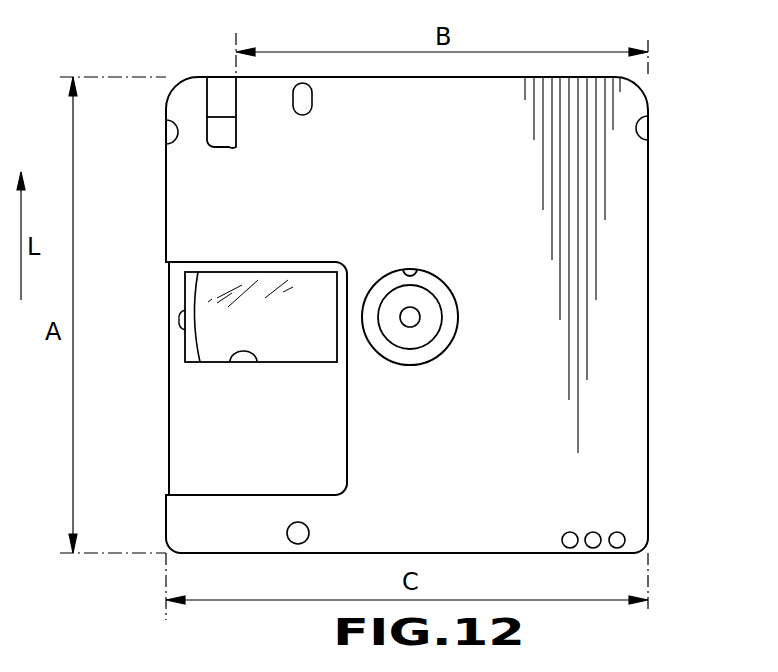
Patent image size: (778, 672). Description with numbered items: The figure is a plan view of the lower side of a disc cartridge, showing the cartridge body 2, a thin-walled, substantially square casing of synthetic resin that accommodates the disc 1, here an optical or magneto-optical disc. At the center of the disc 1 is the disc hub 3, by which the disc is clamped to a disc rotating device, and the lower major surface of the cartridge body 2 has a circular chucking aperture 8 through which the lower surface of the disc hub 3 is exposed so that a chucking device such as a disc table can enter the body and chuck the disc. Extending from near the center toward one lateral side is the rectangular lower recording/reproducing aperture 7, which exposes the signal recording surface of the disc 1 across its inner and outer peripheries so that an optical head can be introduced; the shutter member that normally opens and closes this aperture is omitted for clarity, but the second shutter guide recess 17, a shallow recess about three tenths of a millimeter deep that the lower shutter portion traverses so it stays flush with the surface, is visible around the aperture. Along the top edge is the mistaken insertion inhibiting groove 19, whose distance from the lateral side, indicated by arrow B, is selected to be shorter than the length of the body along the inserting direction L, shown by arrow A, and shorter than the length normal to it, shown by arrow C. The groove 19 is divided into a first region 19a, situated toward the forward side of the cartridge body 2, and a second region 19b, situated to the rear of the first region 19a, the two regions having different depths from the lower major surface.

The disc 1 is at (218, 320).
The cartridge body 2 is at (650, 174).
The disc hub 3 is at (418, 334).
The lower recording/reproducing aperture 7 is at (230, 362).
The chucking aperture 8 is at (415, 270).
The second shutter guide recess 17 is at (208, 495).
The mistaken insertion inhibiting groove 19 is at (206, 90).
The first region 19a is at (225, 98).
The second region 19b is at (227, 135).